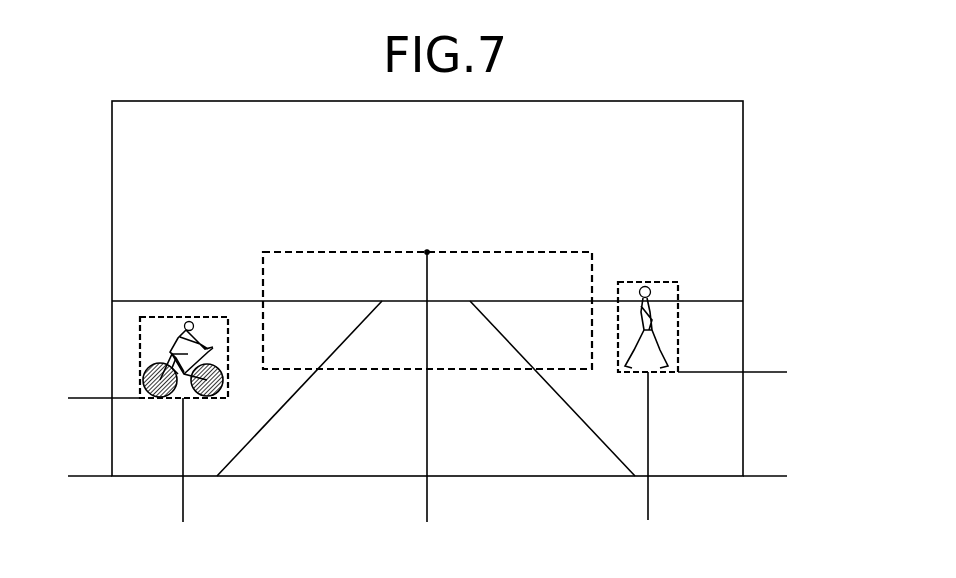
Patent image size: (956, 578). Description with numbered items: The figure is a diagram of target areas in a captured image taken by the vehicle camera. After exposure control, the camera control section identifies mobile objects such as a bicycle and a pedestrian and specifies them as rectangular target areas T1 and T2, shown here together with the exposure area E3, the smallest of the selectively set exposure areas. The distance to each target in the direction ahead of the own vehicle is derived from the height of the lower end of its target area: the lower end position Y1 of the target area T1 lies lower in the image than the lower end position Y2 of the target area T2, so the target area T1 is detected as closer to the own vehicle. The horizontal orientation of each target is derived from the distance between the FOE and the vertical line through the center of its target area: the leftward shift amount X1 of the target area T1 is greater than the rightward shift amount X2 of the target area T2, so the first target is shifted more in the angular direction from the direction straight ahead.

The element FOE is at (427, 252).
The exposure area E3 is at (592, 252).
The target area T1 is at (140, 352).
The target area T2 is at (678, 322).
The shift amount X1 is at (427, 502).
The shift amount X2 is at (648, 501).
The lower end position Y1 is at (85, 398).
The lower end position Y2 is at (768, 372).